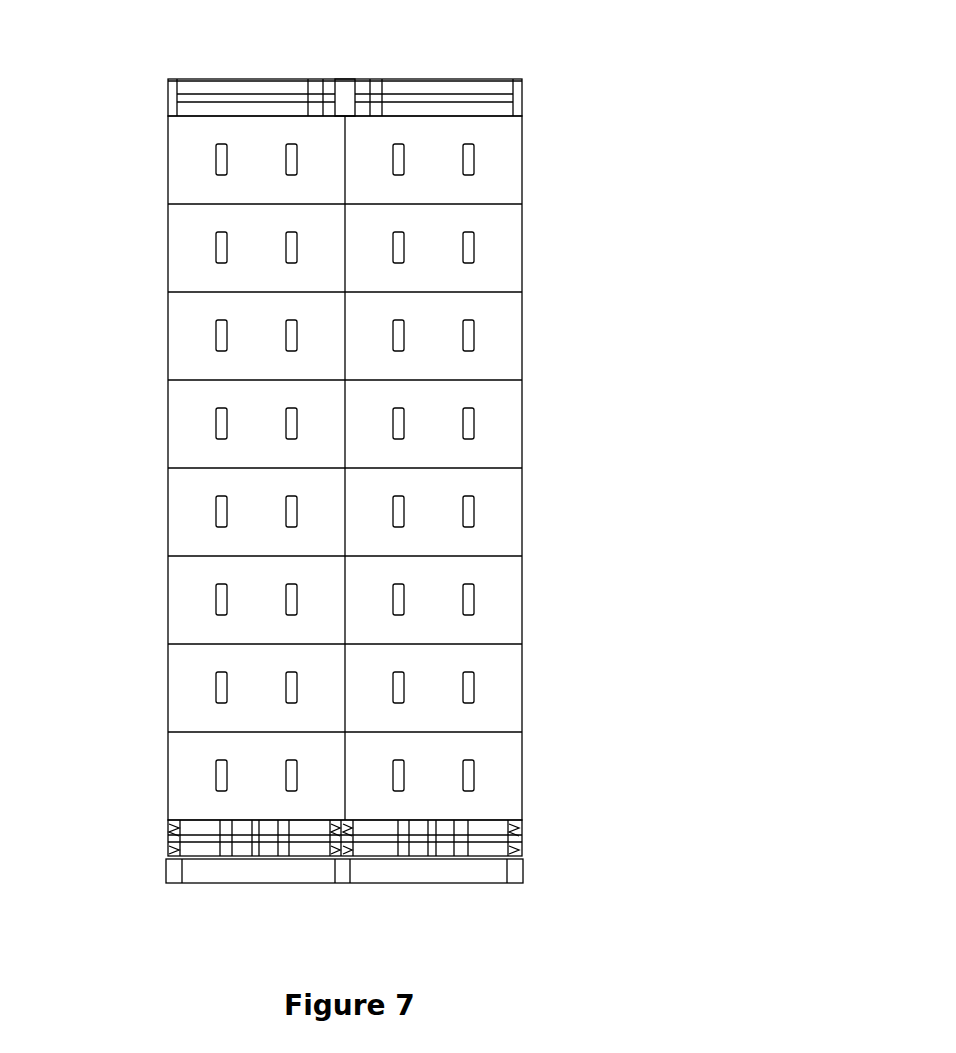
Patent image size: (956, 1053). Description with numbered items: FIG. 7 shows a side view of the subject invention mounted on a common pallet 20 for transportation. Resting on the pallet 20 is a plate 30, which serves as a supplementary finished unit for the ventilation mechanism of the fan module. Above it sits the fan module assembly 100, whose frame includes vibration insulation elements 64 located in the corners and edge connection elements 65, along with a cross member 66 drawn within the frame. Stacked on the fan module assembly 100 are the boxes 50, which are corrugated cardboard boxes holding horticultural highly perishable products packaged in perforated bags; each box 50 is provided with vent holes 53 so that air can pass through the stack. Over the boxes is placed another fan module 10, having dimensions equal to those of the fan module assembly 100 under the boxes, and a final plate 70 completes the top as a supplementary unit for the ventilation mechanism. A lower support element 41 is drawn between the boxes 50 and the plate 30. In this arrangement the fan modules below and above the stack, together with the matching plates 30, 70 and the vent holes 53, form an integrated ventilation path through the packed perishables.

The fan module assembly 100 is at (160, 842).
The fan module 10 is at (531, 97).
The common pallets 20 is at (395, 848).
The plate 30 is at (396, 818).
The bottom support frame 41 is at (396, 807).
The boxes 50 is at (395, 468).
The vent holes 53 is at (419, 457).
The vibration insulation element 64 is at (127, 84).
The edge connection element 65 is at (562, 65).
The cross rail 66 is at (331, 78).
The final plate 70 is at (387, 65).